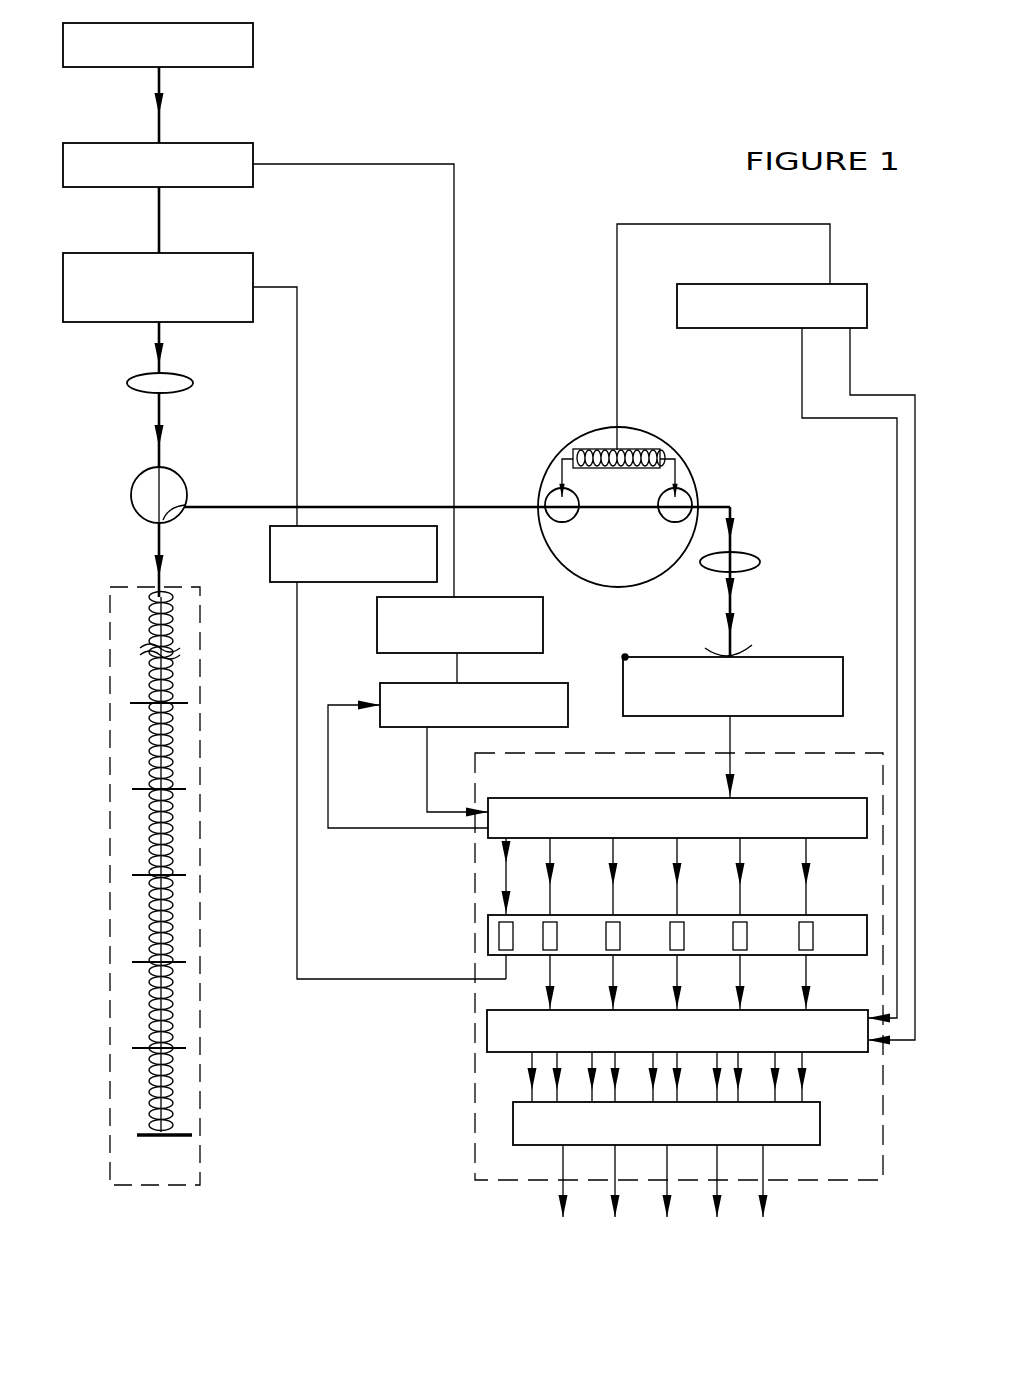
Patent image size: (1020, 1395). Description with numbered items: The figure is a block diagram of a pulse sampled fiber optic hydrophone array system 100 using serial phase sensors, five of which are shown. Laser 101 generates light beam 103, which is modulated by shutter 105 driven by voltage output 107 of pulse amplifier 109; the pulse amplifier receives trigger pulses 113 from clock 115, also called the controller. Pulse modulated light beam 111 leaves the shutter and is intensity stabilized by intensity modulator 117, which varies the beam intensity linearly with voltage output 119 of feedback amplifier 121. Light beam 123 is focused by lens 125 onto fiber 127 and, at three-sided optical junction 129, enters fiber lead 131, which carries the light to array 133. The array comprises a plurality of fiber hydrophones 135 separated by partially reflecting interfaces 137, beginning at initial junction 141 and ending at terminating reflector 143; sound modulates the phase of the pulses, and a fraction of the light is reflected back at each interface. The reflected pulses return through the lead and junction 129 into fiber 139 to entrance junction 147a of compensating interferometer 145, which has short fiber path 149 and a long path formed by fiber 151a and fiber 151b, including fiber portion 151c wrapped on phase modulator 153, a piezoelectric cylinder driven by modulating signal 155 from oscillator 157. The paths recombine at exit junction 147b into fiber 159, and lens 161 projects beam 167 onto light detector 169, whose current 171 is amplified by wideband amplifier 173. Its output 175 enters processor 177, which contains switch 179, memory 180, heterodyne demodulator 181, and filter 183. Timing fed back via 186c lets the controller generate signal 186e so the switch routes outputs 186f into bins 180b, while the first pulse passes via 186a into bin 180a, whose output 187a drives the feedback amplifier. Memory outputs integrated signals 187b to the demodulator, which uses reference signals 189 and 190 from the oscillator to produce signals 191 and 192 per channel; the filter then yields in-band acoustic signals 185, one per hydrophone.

The pulse sampled fiber optic hydrophone array system 100 is at (617, 137).
The laser 101 is at (253, 48).
The light beam 103 is at (159, 80).
The shutter 105 is at (253, 143).
The voltage output 107 is at (395, 163).
The pulse amplifier 109 is at (478, 597).
The pulse modulated light beam 111 is at (159, 197).
The trigger pulses 113 is at (457, 673).
The clock 115 is at (568, 683).
The intensity modulator 117 is at (253, 267).
The voltage output 119 is at (295, 337).
The feedback amplifier 121 is at (320, 583).
The light beam 123 is at (159, 338).
The lens 125 is at (180, 375).
The fiber 127 is at (162, 417).
The three-sided optical junction 129 is at (140, 472).
The fiber lead 131 is at (162, 537).
The array 133 is at (200, 1185).
The fiber hydrophones 135 is at (170, 742).
The interfaces 137 is at (185, 788).
The fiber 139 is at (425, 505).
The initial junction 141 is at (178, 702).
The terminating reflector 143 is at (185, 1135).
The post hydrophone compensating interferometer 145 is at (570, 438).
The entrance junction 147a is at (573, 518).
The exit junction 147b is at (675, 527).
The short fiber path 149 is at (588, 507).
The fiber 151a is at (570, 472).
The fiber 151b is at (677, 463).
The fiber portion 151c is at (655, 452).
The phase modulator 153 is at (597, 448).
The modulating signal 155 is at (830, 260).
The oscillator 157 is at (698, 284).
The fiber 159 is at (760, 485).
The lens 161 is at (753, 557).
The beam 167 is at (737, 610).
The light detector 169 is at (707, 648).
The current 171 is at (733, 655).
The wideband amplifier 173 is at (832, 655).
The output 175 is at (736, 760).
The processor 177 is at (560, 750).
The switch 179 is at (798, 795).
The memory 180 is at (487, 938).
The bin 180a is at (488, 957).
The bins 180b is at (836, 958).
The heterodyne demodulator 181 is at (487, 1032).
The filter 183 is at (820, 1125).
The acoustic signals 185 is at (763, 1180).
The switch output to bin 180a 186a is at (503, 873).
The timing feedback 186c is at (415, 830).
The switching signal 186e is at (427, 803).
The switch outputs 186f is at (808, 898).
The output of bin 180a 187a is at (367, 982).
The integrated signals 187b is at (797, 1006).
The reference signal 189 is at (802, 373).
The reference signal 190 is at (850, 358).
The demodulator output signal 191 is at (532, 1060).
The demodulator output signal 192 is at (557, 1068).